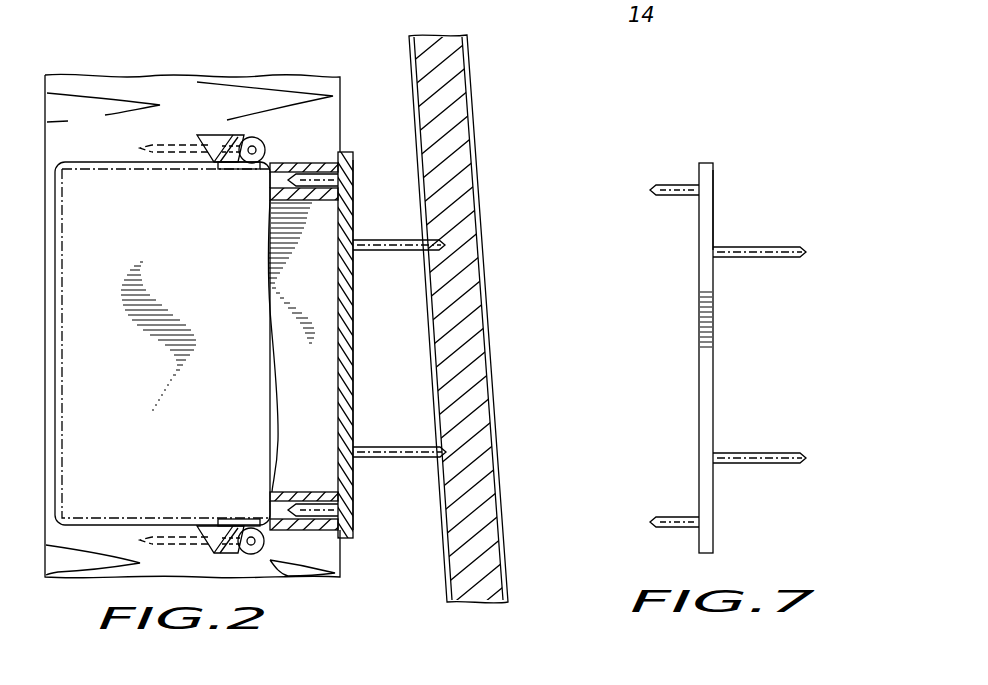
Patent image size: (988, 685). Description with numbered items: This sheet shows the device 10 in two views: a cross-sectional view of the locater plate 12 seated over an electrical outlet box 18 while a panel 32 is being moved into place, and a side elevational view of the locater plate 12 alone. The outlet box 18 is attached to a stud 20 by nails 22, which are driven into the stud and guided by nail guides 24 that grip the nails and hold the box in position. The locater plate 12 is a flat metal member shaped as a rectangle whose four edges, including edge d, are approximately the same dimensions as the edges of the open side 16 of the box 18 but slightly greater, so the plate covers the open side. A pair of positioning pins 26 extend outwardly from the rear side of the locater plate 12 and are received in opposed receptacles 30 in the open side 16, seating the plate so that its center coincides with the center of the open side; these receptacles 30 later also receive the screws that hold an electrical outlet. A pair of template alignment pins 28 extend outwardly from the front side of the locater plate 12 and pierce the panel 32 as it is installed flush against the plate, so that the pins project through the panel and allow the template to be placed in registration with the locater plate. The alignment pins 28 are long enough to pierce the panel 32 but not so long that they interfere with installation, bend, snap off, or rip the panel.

In FIG. 2, the device 10 is at (363, 533).
In FIG. 2, the locater plate 12 is at (358, 346).
In FIG. 7, the locater plate 12 is at (698, 315).
In FIG. 2, the open side 16 is at (353, 212).
In FIG. 2, the electrical outlet box 18 is at (92, 180).
In FIG. 2, the stud 20 is at (90, 80).
In FIG. 2, the nails 22 is at (253, 137).
In FIG. 2, the nail guides 24 is at (200, 132).
In FIG. 2, the positioning pins 26 is at (350, 166).
In FIG. 7, the positioning pins 26 is at (672, 186).
In FIG. 2, the template alignment pins 28 is at (472, 238).
In FIG. 7, the template alignment pins 28 is at (776, 258).
In FIG. 2, the receptacles 30 is at (305, 174).
In FIG. 2, the panel 32 is at (478, 141).
In FIG. 7, the edge of the member d is at (715, 212).